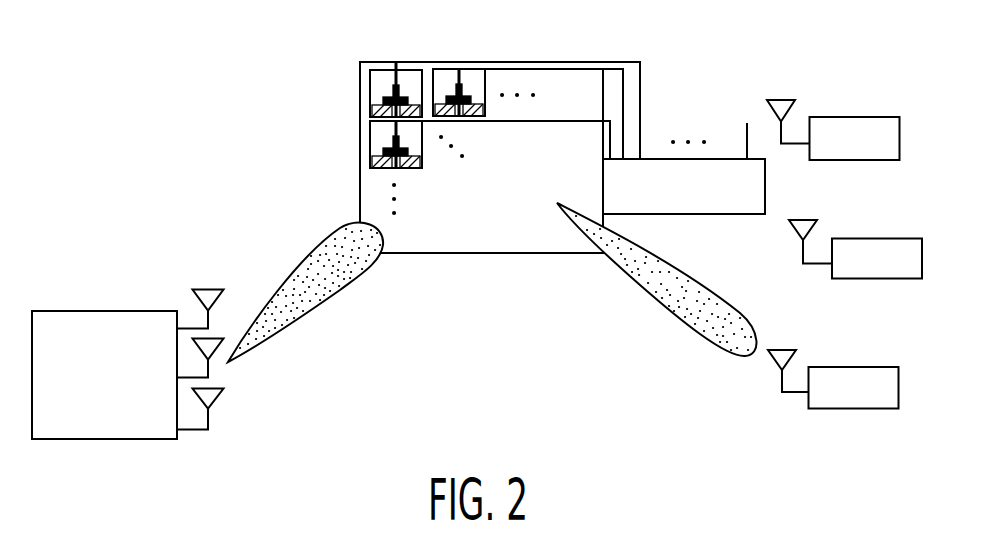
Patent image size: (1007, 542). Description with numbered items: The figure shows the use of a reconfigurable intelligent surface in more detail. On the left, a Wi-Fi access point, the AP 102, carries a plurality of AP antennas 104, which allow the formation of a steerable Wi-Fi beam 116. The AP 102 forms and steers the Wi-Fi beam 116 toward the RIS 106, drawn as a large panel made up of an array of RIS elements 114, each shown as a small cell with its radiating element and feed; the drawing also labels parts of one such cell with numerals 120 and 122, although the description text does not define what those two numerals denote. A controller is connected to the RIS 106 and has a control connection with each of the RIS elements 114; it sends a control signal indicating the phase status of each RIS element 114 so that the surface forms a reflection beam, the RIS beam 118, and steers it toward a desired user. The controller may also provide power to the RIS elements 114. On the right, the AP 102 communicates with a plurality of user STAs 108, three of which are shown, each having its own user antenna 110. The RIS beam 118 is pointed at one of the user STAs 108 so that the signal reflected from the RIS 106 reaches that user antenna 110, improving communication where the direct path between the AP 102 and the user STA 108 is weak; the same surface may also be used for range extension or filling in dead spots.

The AP 102 is at (105, 310).
The AP antenna 104 is at (212, 290).
The RIS 106 is at (483, 255).
The user STA 108 is at (883, 117).
The user antenna 110 is at (782, 100).
The RIS element 114 is at (377, 97).
The Wi-Fi beam 116 is at (330, 295).
The RIS beam 118 is at (662, 298).
The feed line 120 is at (382, 88).
The antenna cell / ground 122 is at (373, 110).